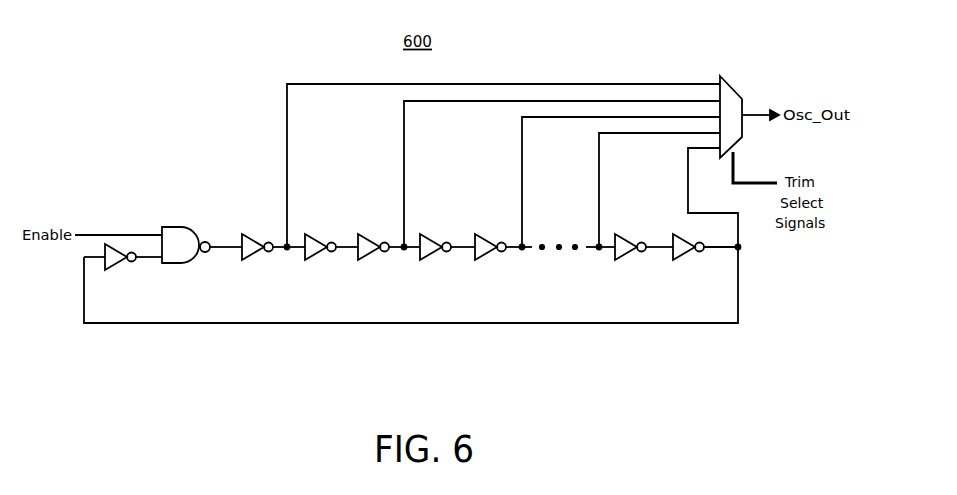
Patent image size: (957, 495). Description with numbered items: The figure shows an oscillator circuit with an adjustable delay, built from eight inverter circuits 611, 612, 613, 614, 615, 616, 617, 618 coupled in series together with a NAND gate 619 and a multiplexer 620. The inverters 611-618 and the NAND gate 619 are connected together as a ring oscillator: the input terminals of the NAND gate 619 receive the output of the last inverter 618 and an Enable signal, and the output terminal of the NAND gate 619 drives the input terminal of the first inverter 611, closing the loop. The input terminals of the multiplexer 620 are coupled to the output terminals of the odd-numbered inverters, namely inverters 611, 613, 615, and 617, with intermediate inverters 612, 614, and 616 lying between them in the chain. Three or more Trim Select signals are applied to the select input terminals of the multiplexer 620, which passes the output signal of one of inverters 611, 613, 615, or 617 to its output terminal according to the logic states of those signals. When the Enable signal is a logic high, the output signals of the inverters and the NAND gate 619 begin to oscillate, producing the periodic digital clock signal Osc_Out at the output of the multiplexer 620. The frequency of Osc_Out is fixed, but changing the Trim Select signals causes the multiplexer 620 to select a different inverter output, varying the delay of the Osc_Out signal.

The inverter circuit 611 is at (250, 260).
The inverter circuit 612 is at (313, 260).
The inverter circuit 613 is at (366, 260).
The inverter circuit 614 is at (428, 260).
The inverter circuit 615 is at (483, 260).
The inverter circuit 616 is at (623, 260).
The inverter circuit 617 is at (681, 260).
The inverter circuit 618 is at (113, 268).
The NAND gate 619 is at (182, 227).
The multiplexer 620 is at (732, 80).